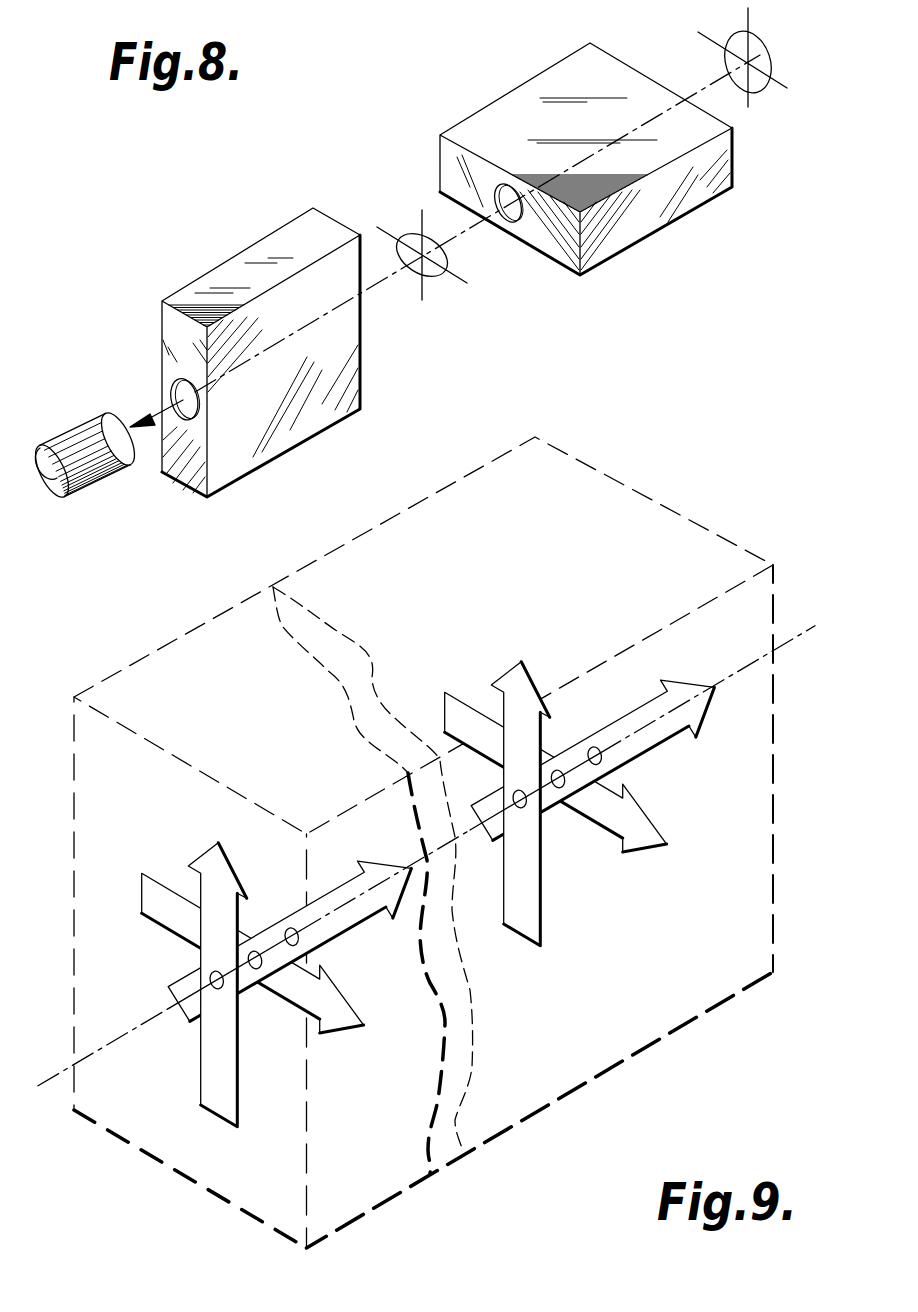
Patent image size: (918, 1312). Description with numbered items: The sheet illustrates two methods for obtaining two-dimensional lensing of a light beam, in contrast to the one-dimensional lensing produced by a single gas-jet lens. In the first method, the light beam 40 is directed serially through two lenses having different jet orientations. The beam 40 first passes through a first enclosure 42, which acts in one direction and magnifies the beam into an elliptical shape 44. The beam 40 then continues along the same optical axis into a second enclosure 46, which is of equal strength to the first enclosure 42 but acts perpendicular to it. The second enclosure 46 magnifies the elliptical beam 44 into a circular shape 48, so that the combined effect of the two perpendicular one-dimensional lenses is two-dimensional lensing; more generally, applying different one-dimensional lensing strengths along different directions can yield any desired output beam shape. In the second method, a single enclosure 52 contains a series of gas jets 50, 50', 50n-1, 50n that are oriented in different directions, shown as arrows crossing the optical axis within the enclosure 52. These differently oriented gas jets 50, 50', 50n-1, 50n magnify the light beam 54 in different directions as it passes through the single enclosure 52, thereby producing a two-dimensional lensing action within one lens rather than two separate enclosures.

In FIG. 8, the light beam 40 is at (144, 414).
In FIG. 8, the first enclosure 42 is at (247, 247).
In FIG. 8, the elliptical shape 44 is at (421, 213).
In FIG. 8, the second enclosure 46 is at (516, 90).
In FIG. 8, the circular shape 48 is at (758, 92).
In FIG. 9, the gas jet 50 is at (185, 985).
In FIG. 9, the gas jet 50' is at (253, 969).
In FIG. 9, the gas jet 50n is at (458, 693).
In FIG. 9, the gas jet 50n-1 is at (540, 910).
In FIG. 9, the single enclosure 52 is at (584, 1089).
In FIG. 9, the light beam 54 is at (180, 977).